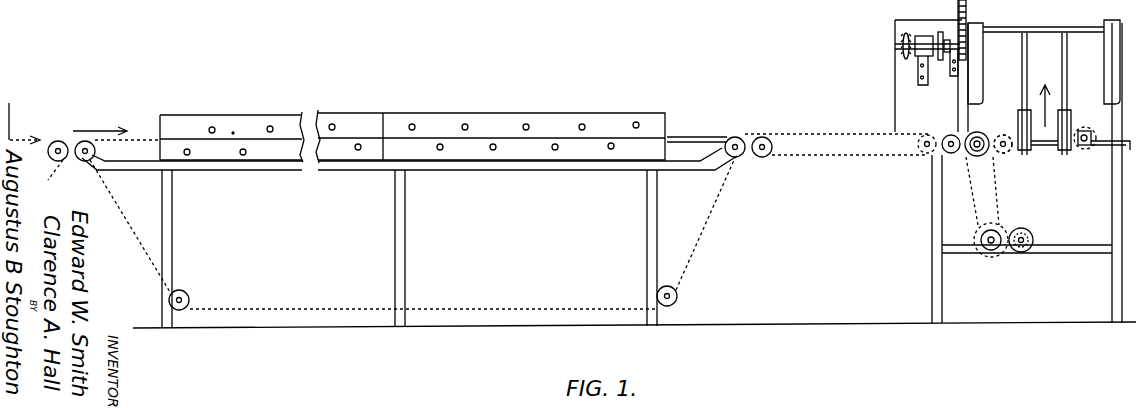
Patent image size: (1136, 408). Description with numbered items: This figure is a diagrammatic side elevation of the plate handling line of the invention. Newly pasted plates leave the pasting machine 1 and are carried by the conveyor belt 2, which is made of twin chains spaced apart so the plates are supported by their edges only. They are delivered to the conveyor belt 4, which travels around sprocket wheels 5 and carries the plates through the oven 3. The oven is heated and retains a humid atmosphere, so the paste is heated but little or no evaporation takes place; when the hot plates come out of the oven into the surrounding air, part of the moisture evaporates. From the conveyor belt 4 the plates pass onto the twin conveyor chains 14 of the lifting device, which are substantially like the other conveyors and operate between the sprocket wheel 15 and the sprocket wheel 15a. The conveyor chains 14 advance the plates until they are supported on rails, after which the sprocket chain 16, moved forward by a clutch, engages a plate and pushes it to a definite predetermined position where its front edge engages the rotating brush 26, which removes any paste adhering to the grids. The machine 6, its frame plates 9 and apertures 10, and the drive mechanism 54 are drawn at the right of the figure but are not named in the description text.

The pasting machine 1 is at (12, 137).
The conveyor belt 2 is at (49, 182).
The oven 3 is at (400, 105).
The conveyor belt 4 is at (140, 138).
The sprocket wheels 5 is at (86, 140).
The stacking machine 6 is at (1055, 20).
The side plates 9 is at (237, 118).
The apertures 10 is at (494, 143).
The twin conveyor chains 14 is at (836, 155).
The sprocket wheel 15 is at (762, 137).
The sprocket wheel 15a is at (983, 152).
The sprocket chain 16 is at (993, 132).
The brush 26 is at (1084, 150).
The drive mechanism 54 is at (906, 38).